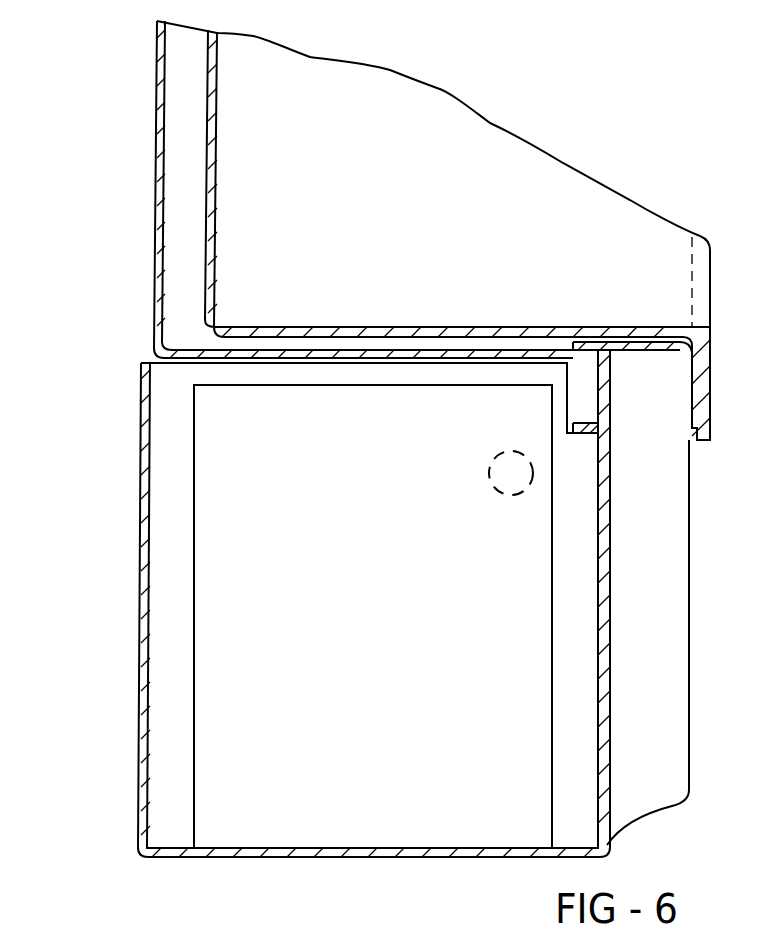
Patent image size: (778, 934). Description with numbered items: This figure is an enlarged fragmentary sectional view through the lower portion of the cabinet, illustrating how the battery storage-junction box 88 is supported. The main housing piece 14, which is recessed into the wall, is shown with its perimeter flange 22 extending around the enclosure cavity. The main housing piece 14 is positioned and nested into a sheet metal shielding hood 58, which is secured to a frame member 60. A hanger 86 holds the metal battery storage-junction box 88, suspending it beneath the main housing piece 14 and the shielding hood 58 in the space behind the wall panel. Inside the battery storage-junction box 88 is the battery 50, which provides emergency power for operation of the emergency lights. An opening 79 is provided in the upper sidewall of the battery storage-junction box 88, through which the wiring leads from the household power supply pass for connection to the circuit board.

The main housing piece 14 is at (202, 53).
The perimeter flange 22 is at (707, 350).
The battery 50 is at (560, 577).
The sheet metal shielding hood 58 is at (183, 362).
The frame member 60 is at (590, 430).
The opening 79 is at (500, 462).
The hanger 86 is at (622, 337).
The battery storage-junction box 88 is at (610, 678).